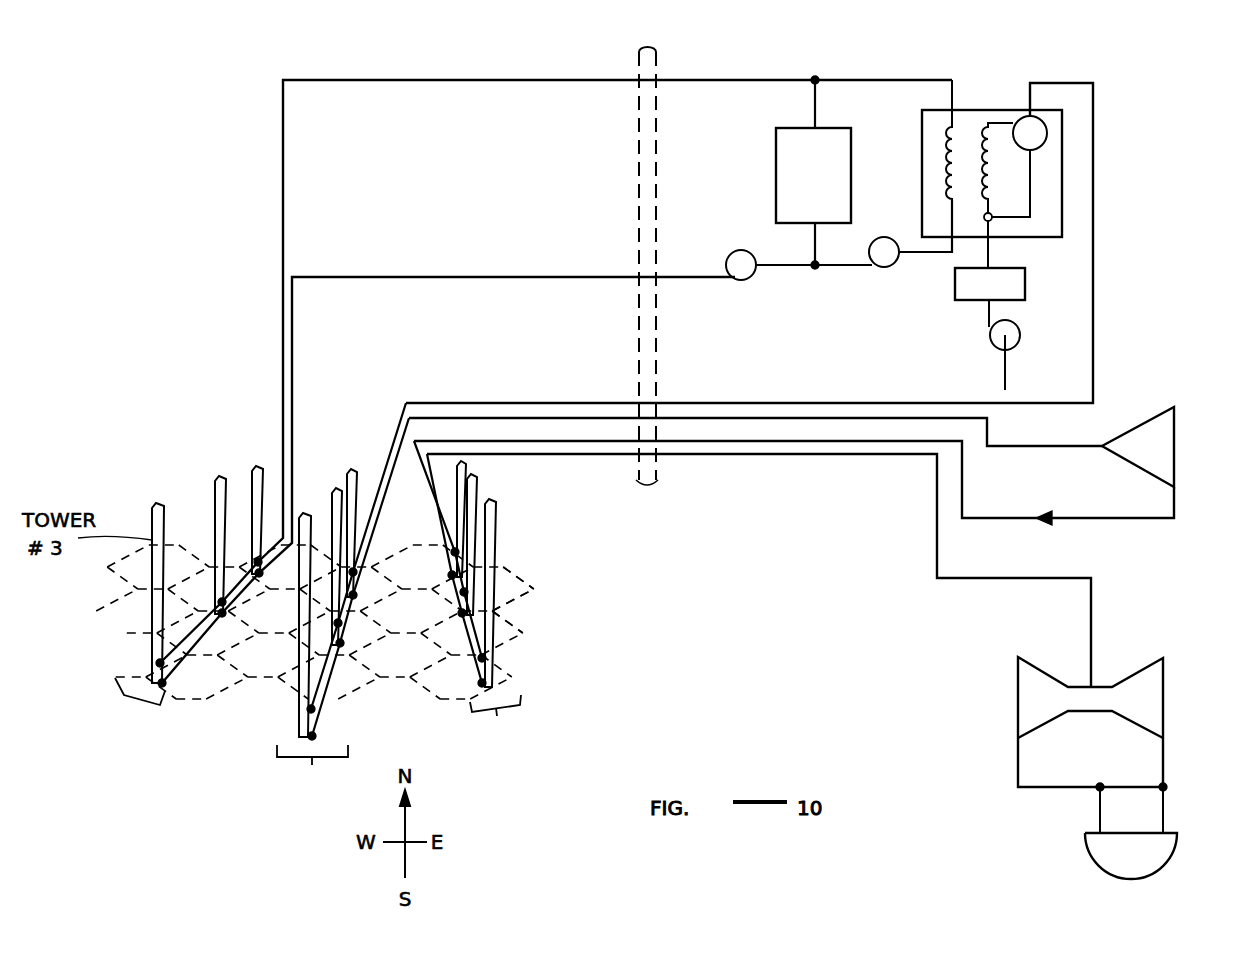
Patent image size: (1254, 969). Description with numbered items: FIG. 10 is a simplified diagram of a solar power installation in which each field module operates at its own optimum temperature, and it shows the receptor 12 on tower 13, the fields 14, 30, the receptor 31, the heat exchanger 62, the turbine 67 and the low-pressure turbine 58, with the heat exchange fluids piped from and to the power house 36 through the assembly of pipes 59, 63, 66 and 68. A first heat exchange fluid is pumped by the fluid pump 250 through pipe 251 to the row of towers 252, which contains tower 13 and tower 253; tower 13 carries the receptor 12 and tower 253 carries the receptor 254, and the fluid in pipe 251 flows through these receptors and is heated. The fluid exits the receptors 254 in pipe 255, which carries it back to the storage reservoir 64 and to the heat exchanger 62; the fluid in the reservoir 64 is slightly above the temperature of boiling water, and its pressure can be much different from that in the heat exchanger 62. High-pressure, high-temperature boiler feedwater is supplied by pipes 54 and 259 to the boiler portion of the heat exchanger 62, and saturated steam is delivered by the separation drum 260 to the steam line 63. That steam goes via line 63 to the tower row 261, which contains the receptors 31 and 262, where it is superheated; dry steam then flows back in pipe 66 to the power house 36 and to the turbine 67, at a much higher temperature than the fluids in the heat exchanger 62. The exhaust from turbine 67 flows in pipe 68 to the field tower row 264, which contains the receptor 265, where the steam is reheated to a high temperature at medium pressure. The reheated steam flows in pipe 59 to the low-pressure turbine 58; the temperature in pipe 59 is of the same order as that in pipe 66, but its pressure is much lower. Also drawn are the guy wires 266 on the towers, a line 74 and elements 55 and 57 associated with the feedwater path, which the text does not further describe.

The receptor 12 is at (155, 505).
The tower 13 is at (152, 575).
The field 14 is at (250, 640).
The field 30 is at (383, 667).
The receptor 31 is at (308, 517).
The power house 36 is at (647, 486).
The pipe 54 is at (1005, 376).
The meter 55 is at (997, 342).
The control unit 57 is at (1015, 286).
The low-pressure turbine 58 is at (1140, 665).
The pipe 59 is at (1093, 603).
The heat exchanger 62 is at (977, 113).
The steam line 63 is at (1093, 105).
The storage reservoir 64 is at (780, 153).
The pipe 66 is at (562, 417).
The turbine 67 is at (1172, 425).
The pipe 68 is at (1175, 507).
The condenser 74 is at (1092, 847).
The fluid pump 250 is at (735, 258).
The pipe 251 is at (570, 277).
The row of towers 252 is at (131, 705).
The tower 253 is at (238, 458).
The receptor 254 is at (256, 468).
The pipe 255 is at (283, 205).
The pipe 259 is at (990, 254).
The separation drum 260 is at (1015, 137).
The tower row 261 is at (312, 769).
The receptor 262 is at (351, 475).
The field tower row 264 is at (496, 718).
The receptor 265 is at (462, 468).
The guy wires 266 is at (505, 553).